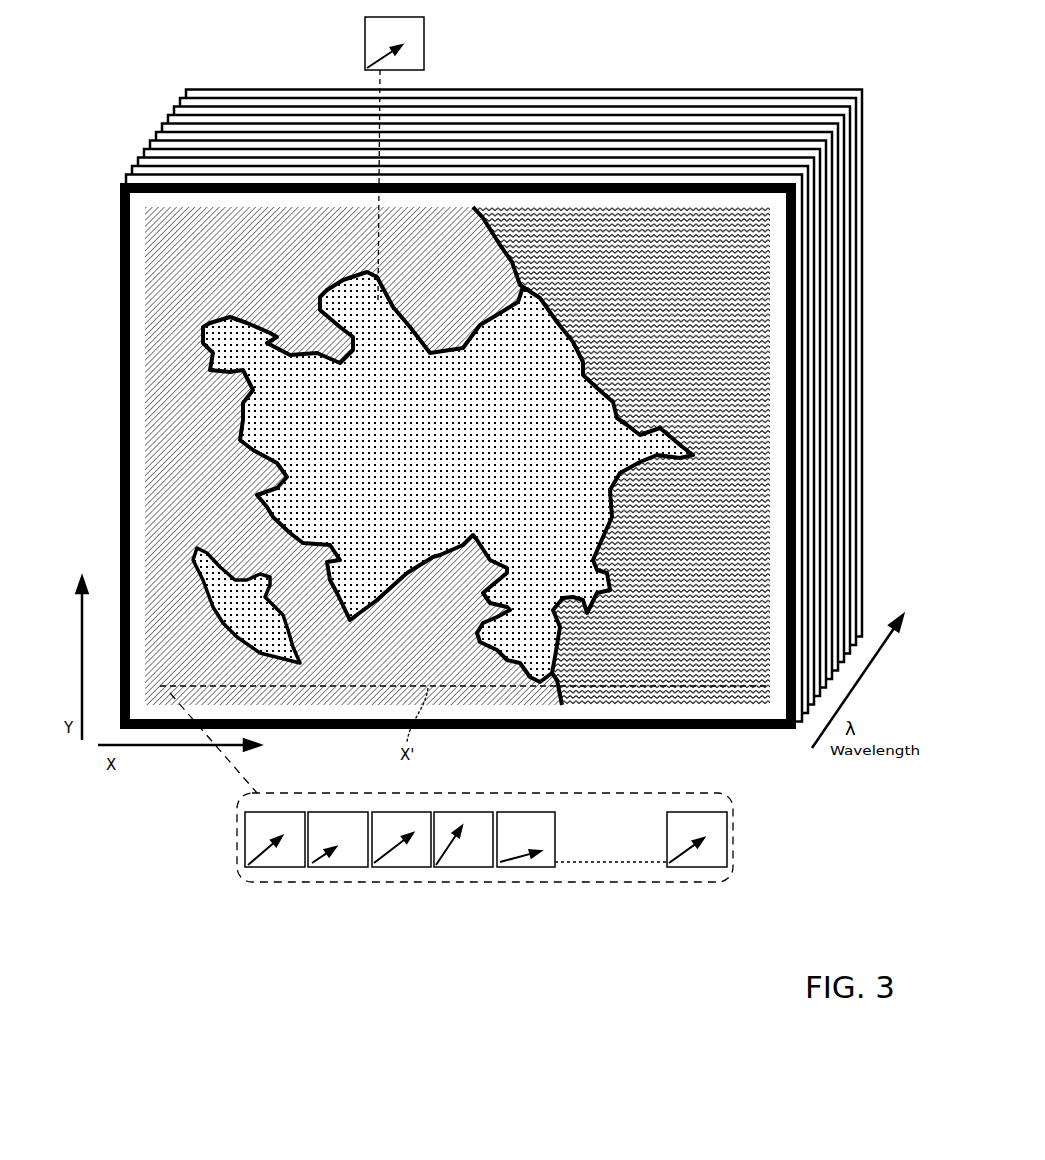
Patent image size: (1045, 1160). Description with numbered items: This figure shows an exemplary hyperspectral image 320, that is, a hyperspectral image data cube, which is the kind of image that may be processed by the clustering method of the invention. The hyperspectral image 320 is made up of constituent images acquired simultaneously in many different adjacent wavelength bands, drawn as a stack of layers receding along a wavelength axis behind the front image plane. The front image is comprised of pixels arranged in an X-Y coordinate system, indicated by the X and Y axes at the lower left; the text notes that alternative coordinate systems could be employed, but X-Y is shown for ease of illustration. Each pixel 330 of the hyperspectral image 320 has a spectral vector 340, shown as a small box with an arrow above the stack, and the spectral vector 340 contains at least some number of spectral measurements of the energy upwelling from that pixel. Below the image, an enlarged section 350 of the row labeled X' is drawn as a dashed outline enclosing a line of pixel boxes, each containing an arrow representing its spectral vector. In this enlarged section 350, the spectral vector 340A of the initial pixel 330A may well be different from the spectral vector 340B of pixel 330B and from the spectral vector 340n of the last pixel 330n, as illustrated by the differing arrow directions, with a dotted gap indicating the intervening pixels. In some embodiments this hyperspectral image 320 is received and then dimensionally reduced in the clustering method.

The hyperspectral image 320 is at (150, 288).
The pixel 330 is at (424, 47).
The spectral vector 340 is at (377, 55).
The initial pixel 330A is at (260, 868).
The spectral vector of the initial pixel 340A is at (250, 852).
The pixel 330B is at (357, 868).
The spectral vector 340B is at (320, 868).
The enlarged section 350 is at (513, 882).
The pixel 330n is at (698, 868).
The spectral vector 340n is at (678, 863).